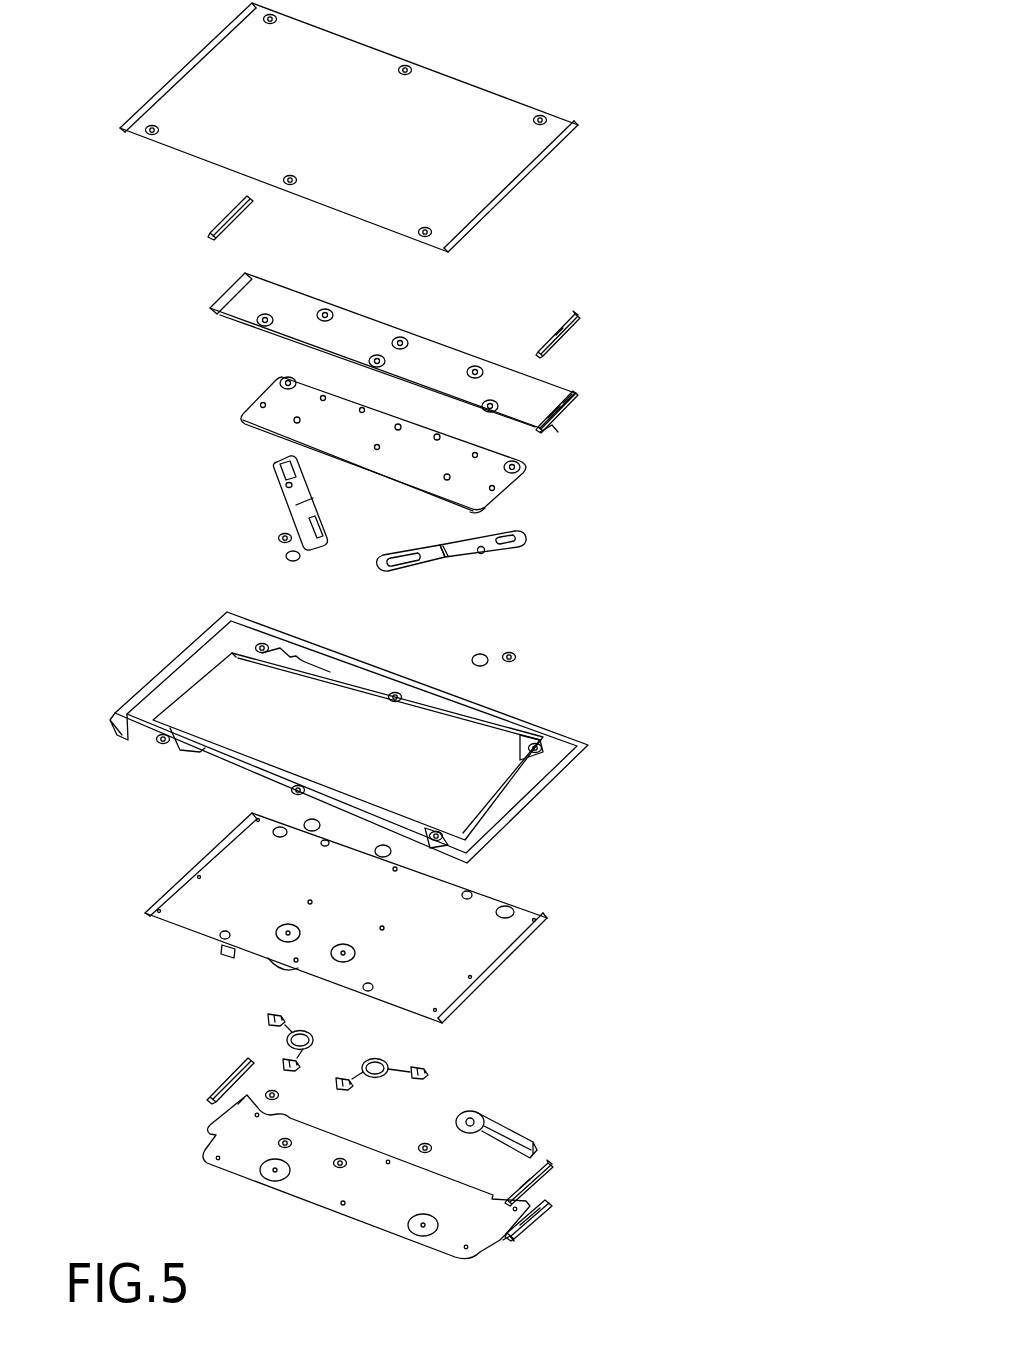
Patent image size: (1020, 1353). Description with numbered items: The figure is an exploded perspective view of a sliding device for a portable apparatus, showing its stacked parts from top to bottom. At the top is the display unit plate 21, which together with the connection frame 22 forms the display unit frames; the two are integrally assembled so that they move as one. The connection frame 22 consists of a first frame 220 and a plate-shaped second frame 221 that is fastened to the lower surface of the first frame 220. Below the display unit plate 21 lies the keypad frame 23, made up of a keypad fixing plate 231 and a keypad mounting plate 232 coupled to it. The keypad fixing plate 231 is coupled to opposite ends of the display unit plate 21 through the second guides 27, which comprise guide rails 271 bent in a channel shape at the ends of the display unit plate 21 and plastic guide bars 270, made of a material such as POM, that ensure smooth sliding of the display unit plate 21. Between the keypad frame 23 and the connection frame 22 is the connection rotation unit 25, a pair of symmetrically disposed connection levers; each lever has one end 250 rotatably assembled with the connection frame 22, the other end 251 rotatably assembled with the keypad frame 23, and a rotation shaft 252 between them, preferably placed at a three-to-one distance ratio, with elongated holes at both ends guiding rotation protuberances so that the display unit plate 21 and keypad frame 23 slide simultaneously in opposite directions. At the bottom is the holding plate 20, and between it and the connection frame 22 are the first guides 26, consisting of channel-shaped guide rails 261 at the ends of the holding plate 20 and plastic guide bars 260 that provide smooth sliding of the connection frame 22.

The holding plate 20 is at (450, 1237).
The display unit plate 21 is at (523, 152).
The connection frame 22 is at (357, 817).
The first frame 220 is at (150, 692).
The second frame 221 is at (175, 882).
The keypad frame 23 is at (372, 393).
The keypad fixing plate 231 is at (240, 312).
The keypad mounting plate 232 is at (255, 413).
The connection rotation unit 25 is at (492, 572).
The one end of connection lever 250 is at (520, 540).
The other end of connection lever 251 is at (385, 552).
The rotation shaft 252 is at (483, 554).
The first guides 26 is at (548, 1205).
The guide bars 260 is at (548, 1165).
The guide rails 261 is at (503, 1247).
The second guides 27 is at (577, 392).
The guide bars 270 is at (575, 311).
The guide rails 271 is at (553, 426).